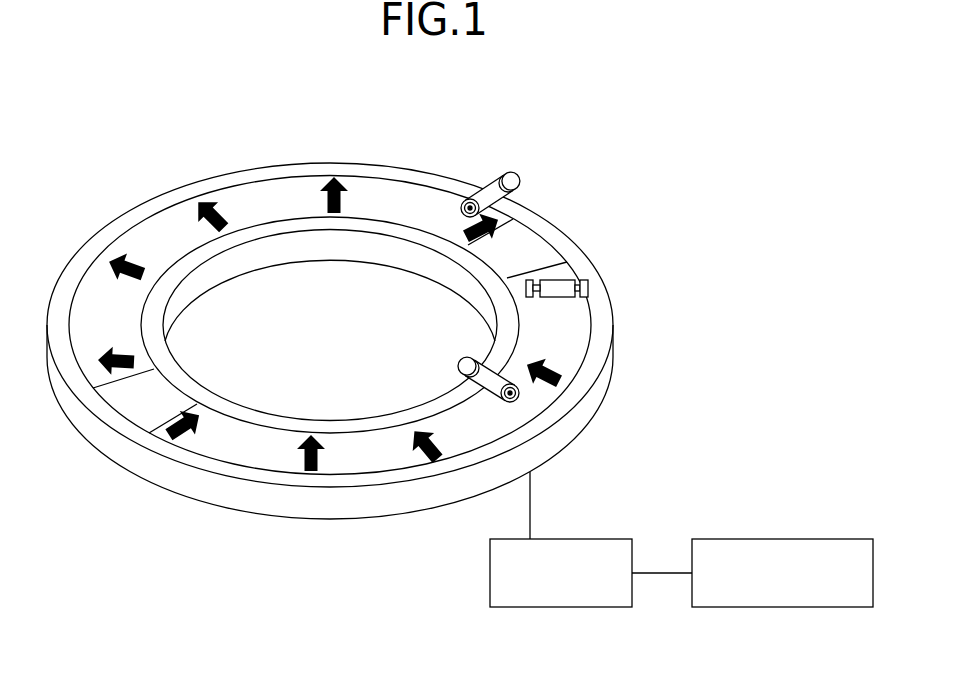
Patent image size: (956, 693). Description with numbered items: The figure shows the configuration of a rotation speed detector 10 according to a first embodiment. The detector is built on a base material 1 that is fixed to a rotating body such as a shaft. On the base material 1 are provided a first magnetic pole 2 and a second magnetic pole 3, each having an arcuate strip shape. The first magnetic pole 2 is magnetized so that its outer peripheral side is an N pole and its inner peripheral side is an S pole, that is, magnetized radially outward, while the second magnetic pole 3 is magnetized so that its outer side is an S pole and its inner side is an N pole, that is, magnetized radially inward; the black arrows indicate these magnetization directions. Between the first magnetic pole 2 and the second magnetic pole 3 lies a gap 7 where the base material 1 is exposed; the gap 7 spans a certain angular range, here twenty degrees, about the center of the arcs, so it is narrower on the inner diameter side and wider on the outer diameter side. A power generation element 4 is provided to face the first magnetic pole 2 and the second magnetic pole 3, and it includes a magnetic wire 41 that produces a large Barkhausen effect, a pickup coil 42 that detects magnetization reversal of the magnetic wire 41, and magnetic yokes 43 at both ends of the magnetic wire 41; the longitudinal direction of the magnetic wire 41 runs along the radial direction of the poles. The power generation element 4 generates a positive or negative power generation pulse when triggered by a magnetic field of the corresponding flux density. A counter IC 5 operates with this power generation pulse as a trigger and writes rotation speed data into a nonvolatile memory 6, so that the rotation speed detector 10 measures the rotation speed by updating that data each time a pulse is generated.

The rotation speed detector 10 is at (349, 332).
The base material 1 is at (116, 450).
The first magnetic pole 2 is at (393, 200).
The second magnetic pole 3 is at (377, 458).
The gap 7 is at (133, 405).
The power generation element 4 is at (603, 304).
The magnetic wire 41 is at (556, 297).
The pickup coil 42 is at (584, 297).
The magnetic yokes 43 is at (588, 282).
The counter IC 5 is at (596, 538).
The nonvolatile memory 6 is at (839, 538).